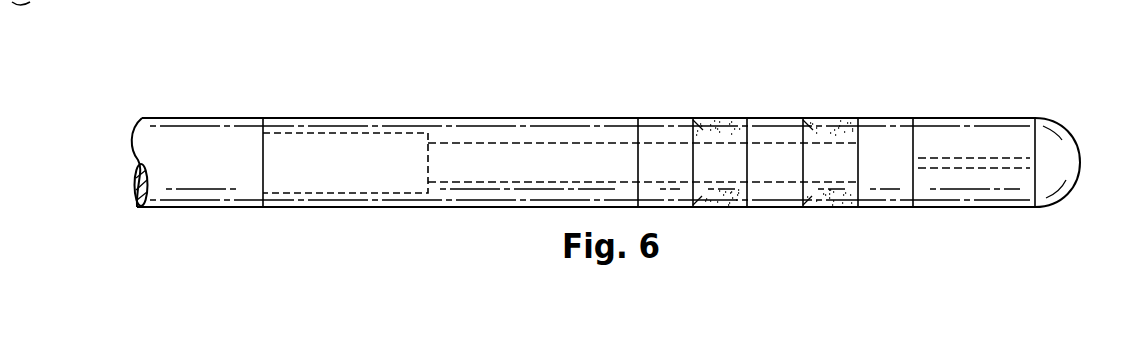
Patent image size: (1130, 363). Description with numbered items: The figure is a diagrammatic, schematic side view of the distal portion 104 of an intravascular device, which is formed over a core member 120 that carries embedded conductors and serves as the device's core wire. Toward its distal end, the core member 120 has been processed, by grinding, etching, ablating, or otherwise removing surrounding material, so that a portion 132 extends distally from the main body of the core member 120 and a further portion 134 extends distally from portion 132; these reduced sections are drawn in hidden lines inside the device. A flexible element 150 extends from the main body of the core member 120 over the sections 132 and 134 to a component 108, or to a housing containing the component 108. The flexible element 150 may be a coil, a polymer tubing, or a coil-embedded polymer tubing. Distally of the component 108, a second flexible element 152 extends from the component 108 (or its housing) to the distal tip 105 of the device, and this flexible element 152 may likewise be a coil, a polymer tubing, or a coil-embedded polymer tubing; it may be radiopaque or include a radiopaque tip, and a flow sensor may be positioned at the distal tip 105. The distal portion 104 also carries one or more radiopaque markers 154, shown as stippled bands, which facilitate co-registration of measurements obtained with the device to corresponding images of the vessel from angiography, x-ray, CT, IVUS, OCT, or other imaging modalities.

The distal portion 104 is at (575, 62).
The distal tip 105 is at (1052, 118).
The component 108 is at (885, 117).
The core member 120 is at (200, 117).
The portion 132 is at (345, 130).
The portion 134 is at (538, 143).
The flexible element 150 is at (448, 117).
The flexible element 152 is at (975, 117).
The radiopaque markers 154 is at (665, 117).